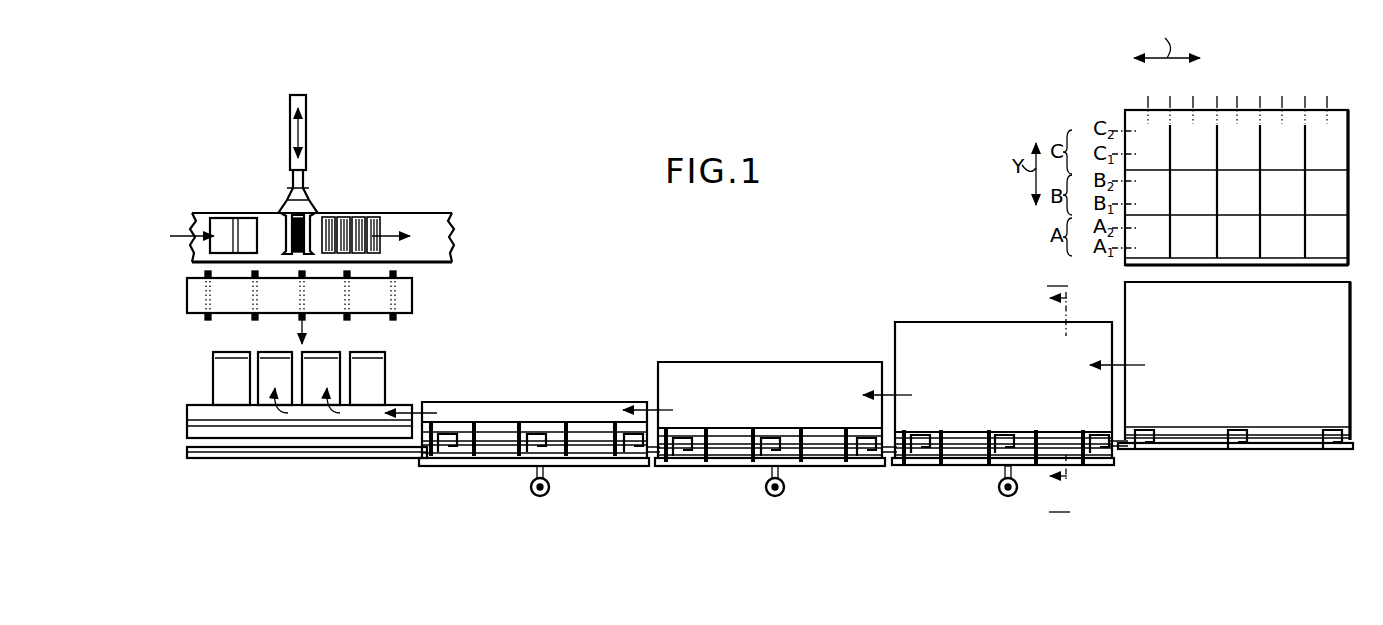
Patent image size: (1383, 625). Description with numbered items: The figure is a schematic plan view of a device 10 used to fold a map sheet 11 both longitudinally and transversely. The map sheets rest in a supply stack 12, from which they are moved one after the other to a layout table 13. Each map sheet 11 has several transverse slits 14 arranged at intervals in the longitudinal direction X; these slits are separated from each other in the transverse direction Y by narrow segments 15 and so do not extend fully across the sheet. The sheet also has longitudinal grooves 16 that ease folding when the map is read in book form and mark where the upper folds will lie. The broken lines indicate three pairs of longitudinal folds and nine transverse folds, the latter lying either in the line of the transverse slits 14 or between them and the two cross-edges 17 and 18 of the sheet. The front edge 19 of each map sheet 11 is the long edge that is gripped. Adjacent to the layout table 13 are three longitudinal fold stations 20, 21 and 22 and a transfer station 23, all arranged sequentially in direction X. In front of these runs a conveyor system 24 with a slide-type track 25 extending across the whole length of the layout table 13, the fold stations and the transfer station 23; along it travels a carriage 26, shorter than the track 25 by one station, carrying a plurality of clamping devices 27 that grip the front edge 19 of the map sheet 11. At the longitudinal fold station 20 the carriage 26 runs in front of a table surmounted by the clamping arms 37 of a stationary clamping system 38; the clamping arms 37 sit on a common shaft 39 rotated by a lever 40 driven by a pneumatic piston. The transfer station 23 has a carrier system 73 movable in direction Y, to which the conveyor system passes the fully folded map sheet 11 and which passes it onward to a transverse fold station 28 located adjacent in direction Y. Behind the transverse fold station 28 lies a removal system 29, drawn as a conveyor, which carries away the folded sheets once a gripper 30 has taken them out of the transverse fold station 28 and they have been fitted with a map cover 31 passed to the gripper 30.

The device 10 is at (975, 83).
The map sheet 11 is at (289, 228).
The supply stack 12 is at (1228, 86).
The layout table 13 is at (1357, 330).
The transverse slits 14 is at (1220, 198).
The narrow segments 15 is at (1231, 219).
The longitudinal grooves 16 is at (1147, 174).
The cross-edge 17 is at (1125, 114).
The cross-edge 18 is at (1349, 138).
The front edge 19 is at (827, 440).
The longitudinal fold station 20 is at (993, 304).
The longitudinal fold station 21 is at (765, 316).
The longitudinal fold station 22 is at (531, 346).
The transfer station 23 is at (303, 331).
The conveyor system 24 is at (1284, 458).
The track 25 is at (287, 458).
The carriage 26 is at (1190, 449).
The clamping devices 27 is at (675, 444).
The transverse fold station 28 is at (418, 292).
The conveyor 29 is at (446, 204).
The gripper 30 is at (308, 200).
The map cover 31 is at (218, 223).
The clamping arms 37 is at (903, 462).
The stationary clamping system 38 is at (1042, 512).
The common shaft 39 is at (958, 462).
The lever 40 is at (774, 493).
The carrier system 73 is at (395, 378).